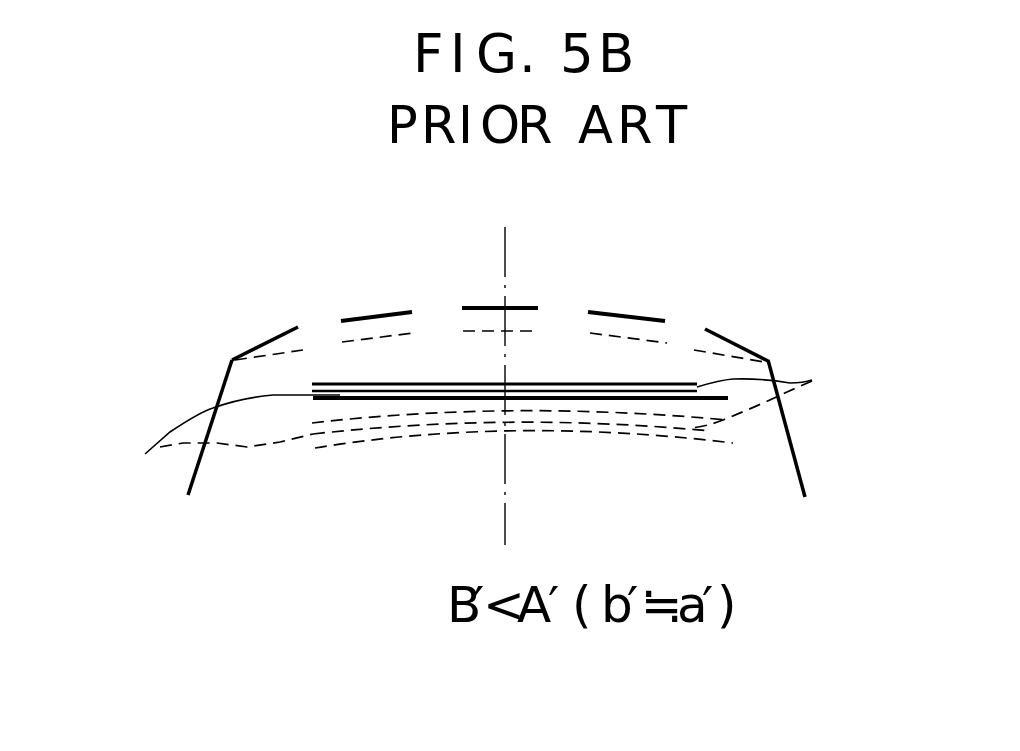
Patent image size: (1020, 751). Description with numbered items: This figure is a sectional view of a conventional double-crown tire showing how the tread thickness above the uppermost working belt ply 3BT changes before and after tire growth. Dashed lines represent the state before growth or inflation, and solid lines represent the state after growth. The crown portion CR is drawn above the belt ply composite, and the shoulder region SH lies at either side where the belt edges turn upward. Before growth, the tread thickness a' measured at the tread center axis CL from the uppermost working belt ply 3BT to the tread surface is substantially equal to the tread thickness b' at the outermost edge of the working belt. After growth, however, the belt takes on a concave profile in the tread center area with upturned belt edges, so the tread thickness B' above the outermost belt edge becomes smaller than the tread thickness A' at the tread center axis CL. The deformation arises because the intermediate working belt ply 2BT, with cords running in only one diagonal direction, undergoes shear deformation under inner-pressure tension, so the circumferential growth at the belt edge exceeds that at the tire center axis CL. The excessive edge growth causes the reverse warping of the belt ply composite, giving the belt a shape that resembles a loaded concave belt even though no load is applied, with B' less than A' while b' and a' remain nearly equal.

The intermediate working belt ply 2BT is at (200, 437).
The uppermost working belt ply 3BT is at (793, 387).
The tread center axis CL is at (498, 356).
The crown portion CR is at (610, 300).
The shoulder portion SH is at (712, 329).
The tread thickness at the center position of the belt after growth A' is at (471, 345).
The tread thickness at the tread center axis before growth a' is at (530, 371).
The tread thickness above the outermost belt edge after growth B' is at (682, 361).
The distance at shoulder between inner profile and belt b' is at (285, 396).